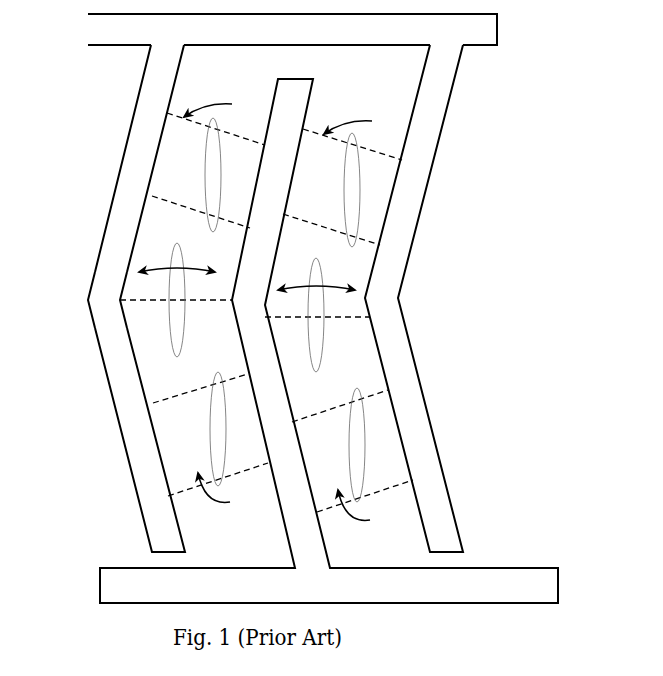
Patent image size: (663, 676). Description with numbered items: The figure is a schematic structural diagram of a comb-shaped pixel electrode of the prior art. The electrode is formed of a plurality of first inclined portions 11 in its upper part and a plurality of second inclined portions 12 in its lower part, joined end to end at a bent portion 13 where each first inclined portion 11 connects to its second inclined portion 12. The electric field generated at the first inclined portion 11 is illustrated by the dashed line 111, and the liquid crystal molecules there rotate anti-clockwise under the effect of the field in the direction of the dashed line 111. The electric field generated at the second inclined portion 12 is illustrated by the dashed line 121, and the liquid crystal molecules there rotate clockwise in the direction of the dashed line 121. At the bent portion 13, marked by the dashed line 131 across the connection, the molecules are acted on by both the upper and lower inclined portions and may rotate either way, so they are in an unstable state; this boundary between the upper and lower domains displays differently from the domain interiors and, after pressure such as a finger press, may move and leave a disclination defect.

The first inclined portion 11 is at (131, 128).
The dashed line 111 is at (163, 200).
The bent portion 13 is at (87, 300).
The central flexible section 131 is at (150, 300).
The second inclined portion 12 is at (112, 402).
The dashed line 121 is at (173, 399).